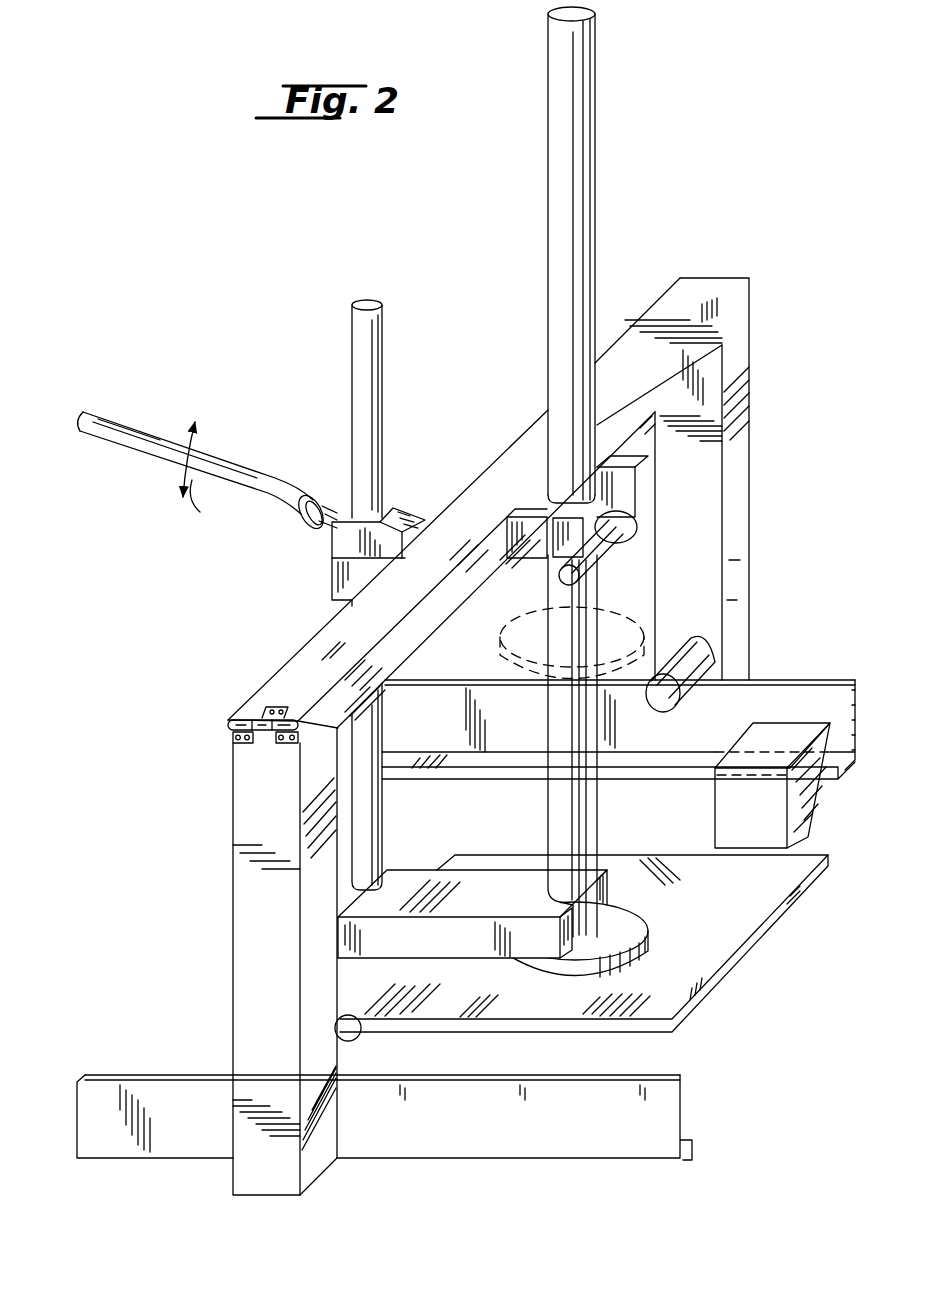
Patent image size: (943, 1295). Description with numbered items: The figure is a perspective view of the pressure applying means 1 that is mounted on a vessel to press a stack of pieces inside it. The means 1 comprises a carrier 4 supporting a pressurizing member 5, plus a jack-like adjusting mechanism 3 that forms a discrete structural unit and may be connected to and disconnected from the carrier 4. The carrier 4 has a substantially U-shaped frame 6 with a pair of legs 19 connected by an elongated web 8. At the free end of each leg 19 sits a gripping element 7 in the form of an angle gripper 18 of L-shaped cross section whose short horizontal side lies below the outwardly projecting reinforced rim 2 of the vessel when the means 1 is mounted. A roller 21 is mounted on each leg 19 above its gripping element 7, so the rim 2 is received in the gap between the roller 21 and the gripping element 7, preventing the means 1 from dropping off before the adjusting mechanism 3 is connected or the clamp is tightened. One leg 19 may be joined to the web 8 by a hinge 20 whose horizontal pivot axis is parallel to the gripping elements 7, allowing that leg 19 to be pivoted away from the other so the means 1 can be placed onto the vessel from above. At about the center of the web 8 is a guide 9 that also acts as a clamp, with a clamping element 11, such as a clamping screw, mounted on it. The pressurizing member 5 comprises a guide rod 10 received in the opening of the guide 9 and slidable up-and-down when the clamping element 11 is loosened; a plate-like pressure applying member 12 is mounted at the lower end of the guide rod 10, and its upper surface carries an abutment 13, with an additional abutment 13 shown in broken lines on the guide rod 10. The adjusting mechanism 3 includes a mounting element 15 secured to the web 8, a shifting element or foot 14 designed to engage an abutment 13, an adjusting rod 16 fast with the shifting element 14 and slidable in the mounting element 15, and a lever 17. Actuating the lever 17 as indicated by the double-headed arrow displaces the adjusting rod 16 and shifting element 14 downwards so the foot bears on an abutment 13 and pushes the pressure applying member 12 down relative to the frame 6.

The pressure applying means 1 is at (262, 298).
The rim 2 is at (808, 728).
The adjusting mechanism 3 is at (341, 569).
The carrier 4 is at (715, 272).
The pressurizing member 5 is at (600, 803).
The frame 6 is at (475, 503).
The gripping element 7 is at (472, 672).
The web 8 is at (468, 510).
The guide 9 is at (599, 520).
The guide rod 10 is at (588, 185).
The clamping element 11 is at (598, 556).
The pressure applying member 12 is at (735, 922).
The abutment 13 is at (622, 632).
The shifting element 14 is at (445, 909).
The mounting element 15 is at (327, 540).
The adjusting rod 16 is at (372, 330).
The lever 17 is at (150, 440).
The angle gripper 18 is at (788, 695).
The leg 19 is at (677, 554).
The hinge 20 is at (228, 725).
The roller 21 is at (703, 650).